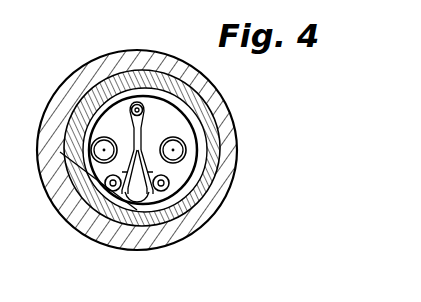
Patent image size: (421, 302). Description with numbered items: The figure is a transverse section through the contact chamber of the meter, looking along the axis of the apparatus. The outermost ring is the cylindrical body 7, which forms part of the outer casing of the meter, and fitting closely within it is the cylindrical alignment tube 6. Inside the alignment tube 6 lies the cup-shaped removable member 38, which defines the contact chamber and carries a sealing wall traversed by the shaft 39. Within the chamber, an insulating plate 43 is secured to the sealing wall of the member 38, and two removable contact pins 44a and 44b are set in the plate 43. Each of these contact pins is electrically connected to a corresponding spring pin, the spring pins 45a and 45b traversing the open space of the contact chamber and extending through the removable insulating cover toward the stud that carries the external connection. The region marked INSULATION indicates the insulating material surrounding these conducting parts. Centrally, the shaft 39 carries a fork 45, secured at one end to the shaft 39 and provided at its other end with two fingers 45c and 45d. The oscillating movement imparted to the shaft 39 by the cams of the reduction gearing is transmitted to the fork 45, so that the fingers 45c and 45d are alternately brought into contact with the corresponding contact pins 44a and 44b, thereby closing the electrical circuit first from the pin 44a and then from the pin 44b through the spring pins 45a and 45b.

The alignment tube 6 is at (78, 108).
The body 7 is at (97, 68).
The cup-shaped removable member 38 is at (175, 71).
The shaft 39 is at (142, 70).
The insulating plate 43 is at (144, 108).
The contact pin 44a is at (77, 211).
The contact pin 44b is at (195, 190).
The fork 45 is at (134, 173).
The spring pin 45a is at (65, 170).
The spring pin 45b is at (169, 184).
The finger 45c is at (124, 206).
The finger 45d is at (199, 227).
The insulation INSULATION is at (174, 158).